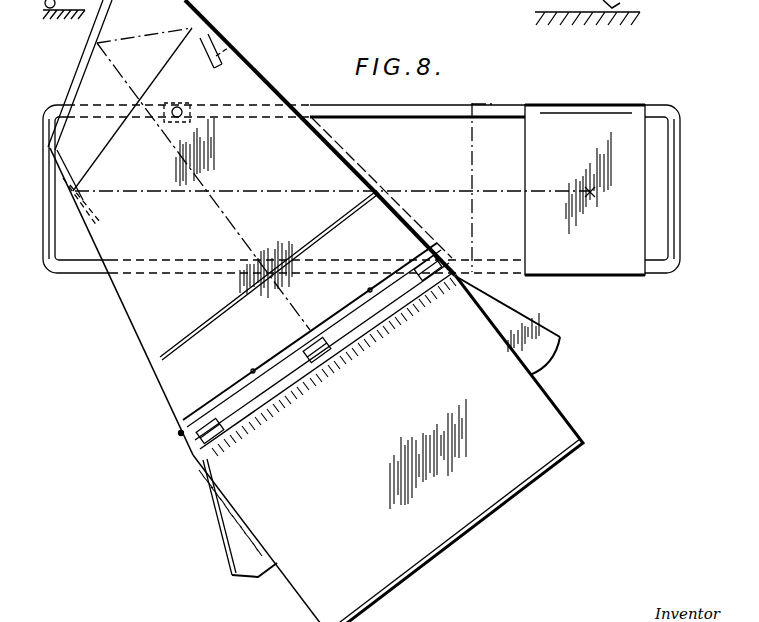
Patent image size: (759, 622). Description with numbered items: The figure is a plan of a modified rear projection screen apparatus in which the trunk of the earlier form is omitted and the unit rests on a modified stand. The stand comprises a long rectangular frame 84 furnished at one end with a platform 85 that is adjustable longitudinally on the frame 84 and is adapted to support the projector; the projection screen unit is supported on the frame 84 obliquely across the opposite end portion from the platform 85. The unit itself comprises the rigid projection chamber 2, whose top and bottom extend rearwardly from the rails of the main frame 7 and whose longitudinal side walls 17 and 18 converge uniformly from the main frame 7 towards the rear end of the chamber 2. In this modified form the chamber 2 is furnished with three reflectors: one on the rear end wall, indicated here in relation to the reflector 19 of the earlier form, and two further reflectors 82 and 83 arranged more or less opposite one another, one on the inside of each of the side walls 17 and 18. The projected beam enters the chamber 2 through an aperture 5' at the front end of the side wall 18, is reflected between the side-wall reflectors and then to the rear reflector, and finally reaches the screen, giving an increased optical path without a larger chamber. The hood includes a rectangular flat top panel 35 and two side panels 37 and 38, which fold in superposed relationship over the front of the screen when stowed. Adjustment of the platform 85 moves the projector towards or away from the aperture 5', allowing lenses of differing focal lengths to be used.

The projection chamber 2 is at (233, 88).
The aperture 5' is at (415, 233).
The main frame 7 is at (192, 432).
The side wall of chamber 17 is at (141, 327).
The side wall of chamber 18 is at (292, 103).
The reflector 19 is at (113, 13).
The top panel of hood 35 is at (533, 413).
The side panel of hood 37 is at (218, 532).
The side panel of hood 38 is at (530, 332).
The reflector 82 is at (98, 222).
The reflector 83 is at (215, 52).
The rectangular frame 84 is at (665, 116).
The platform 85 is at (585, 190).